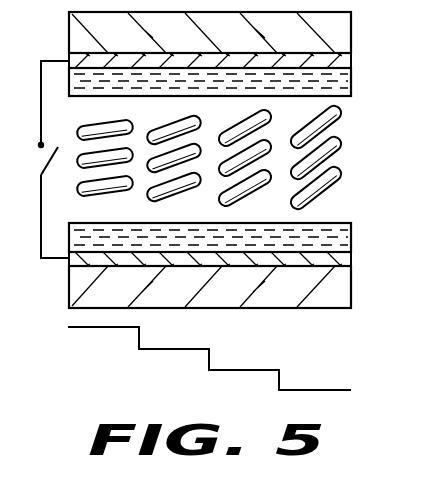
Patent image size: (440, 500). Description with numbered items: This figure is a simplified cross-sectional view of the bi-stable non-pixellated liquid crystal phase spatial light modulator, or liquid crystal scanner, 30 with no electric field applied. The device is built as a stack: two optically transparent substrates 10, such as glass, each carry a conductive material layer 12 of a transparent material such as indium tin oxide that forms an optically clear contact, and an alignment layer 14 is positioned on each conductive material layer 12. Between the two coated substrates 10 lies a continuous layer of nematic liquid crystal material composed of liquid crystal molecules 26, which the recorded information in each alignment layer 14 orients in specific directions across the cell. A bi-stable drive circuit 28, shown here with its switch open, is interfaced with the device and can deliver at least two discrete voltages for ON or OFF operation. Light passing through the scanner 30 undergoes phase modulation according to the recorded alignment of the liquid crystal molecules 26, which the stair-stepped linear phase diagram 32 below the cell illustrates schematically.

The substrate 10 is at (351, 37).
The conductive material layer 12 is at (351, 64).
The alignment layer 14 is at (351, 92).
The liquid crystal molecules 26 is at (336, 141).
The bi-stable drive circuit 28 is at (41, 60).
The bi-stable non-pixellated liquid crystal phase spatial light modulator 30 is at (69, 432).
The stair-stepped linear phase diagram 32 is at (138, 359).